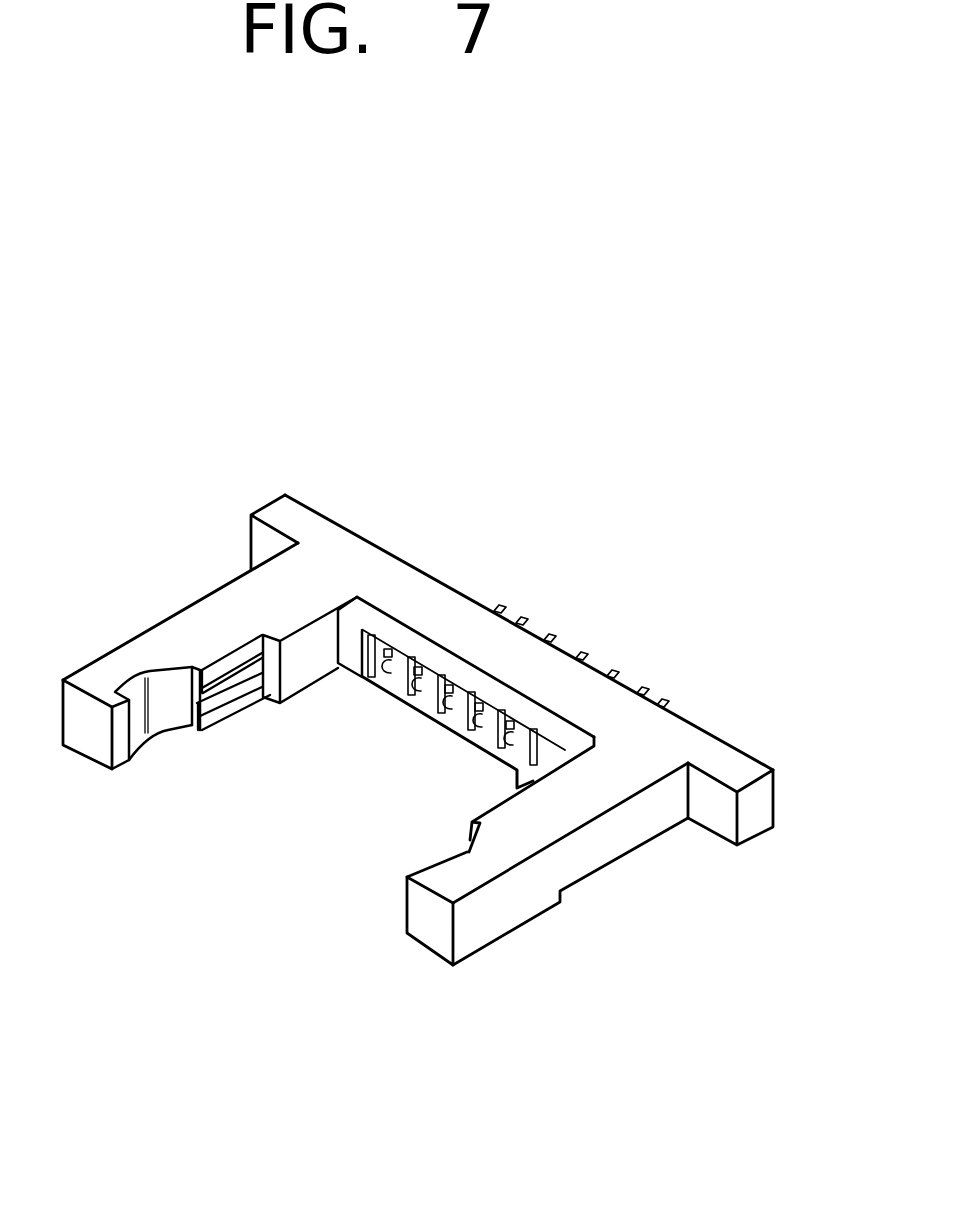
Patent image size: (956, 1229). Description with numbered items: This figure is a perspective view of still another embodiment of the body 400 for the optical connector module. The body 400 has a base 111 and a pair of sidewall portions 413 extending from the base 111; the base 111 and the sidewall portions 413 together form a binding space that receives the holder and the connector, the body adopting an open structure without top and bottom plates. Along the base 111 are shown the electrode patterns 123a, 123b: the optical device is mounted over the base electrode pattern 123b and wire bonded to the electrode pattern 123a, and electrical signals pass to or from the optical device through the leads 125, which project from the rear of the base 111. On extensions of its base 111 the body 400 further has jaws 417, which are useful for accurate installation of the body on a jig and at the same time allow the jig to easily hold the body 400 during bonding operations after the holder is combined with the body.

The body 400 is at (388, 668).
The base 111 is at (473, 625).
The electrode pattern 123a is at (384, 652).
The base electrode pattern 123b is at (372, 634).
The leads 125 is at (670, 698).
The sidewall portion 413 is at (190, 617).
The jaw 417 is at (260, 535).